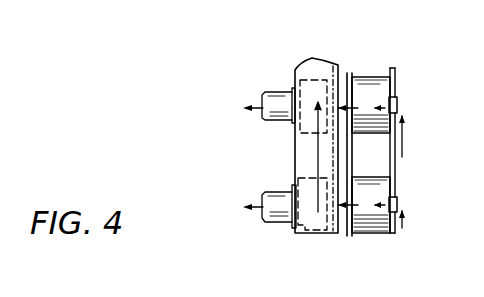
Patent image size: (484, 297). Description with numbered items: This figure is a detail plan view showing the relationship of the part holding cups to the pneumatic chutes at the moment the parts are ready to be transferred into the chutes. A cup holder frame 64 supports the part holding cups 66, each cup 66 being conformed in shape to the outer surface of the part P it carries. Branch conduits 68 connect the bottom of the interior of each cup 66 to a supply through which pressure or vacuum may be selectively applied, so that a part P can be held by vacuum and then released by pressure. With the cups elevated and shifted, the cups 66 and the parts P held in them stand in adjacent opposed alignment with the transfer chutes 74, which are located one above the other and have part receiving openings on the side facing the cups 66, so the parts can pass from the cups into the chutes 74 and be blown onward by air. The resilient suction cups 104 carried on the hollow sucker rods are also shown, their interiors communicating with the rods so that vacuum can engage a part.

The transfer chute 74 is at (302, 70).
The suction cup 104 is at (288, 92).
The cup holder frame 64 is at (377, 138).
The part holding cup 66 is at (383, 93).
The branch conduit 68 is at (397, 103).
The part P is at (305, 234).